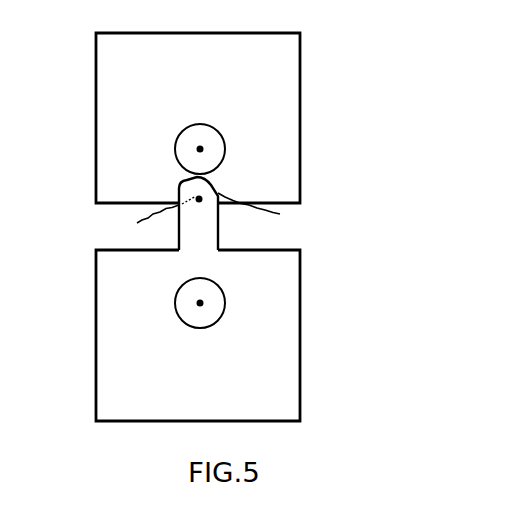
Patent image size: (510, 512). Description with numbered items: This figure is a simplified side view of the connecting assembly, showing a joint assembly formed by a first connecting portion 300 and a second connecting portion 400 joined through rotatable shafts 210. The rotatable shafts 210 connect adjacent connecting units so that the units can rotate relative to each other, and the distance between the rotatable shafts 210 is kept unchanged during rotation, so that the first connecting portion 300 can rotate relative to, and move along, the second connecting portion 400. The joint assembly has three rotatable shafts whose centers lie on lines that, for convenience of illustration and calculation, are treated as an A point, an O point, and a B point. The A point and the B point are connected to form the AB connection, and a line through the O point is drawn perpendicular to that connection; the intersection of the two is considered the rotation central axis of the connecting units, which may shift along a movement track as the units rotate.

The rotatable shaft 210 is at (202, 133).
The first connecting portion 300 is at (191, 138).
The second connecting portion 400 is at (221, 318).
The A point A is at (200, 149).
The O point O is at (199, 199).
The B point B is at (200, 303).